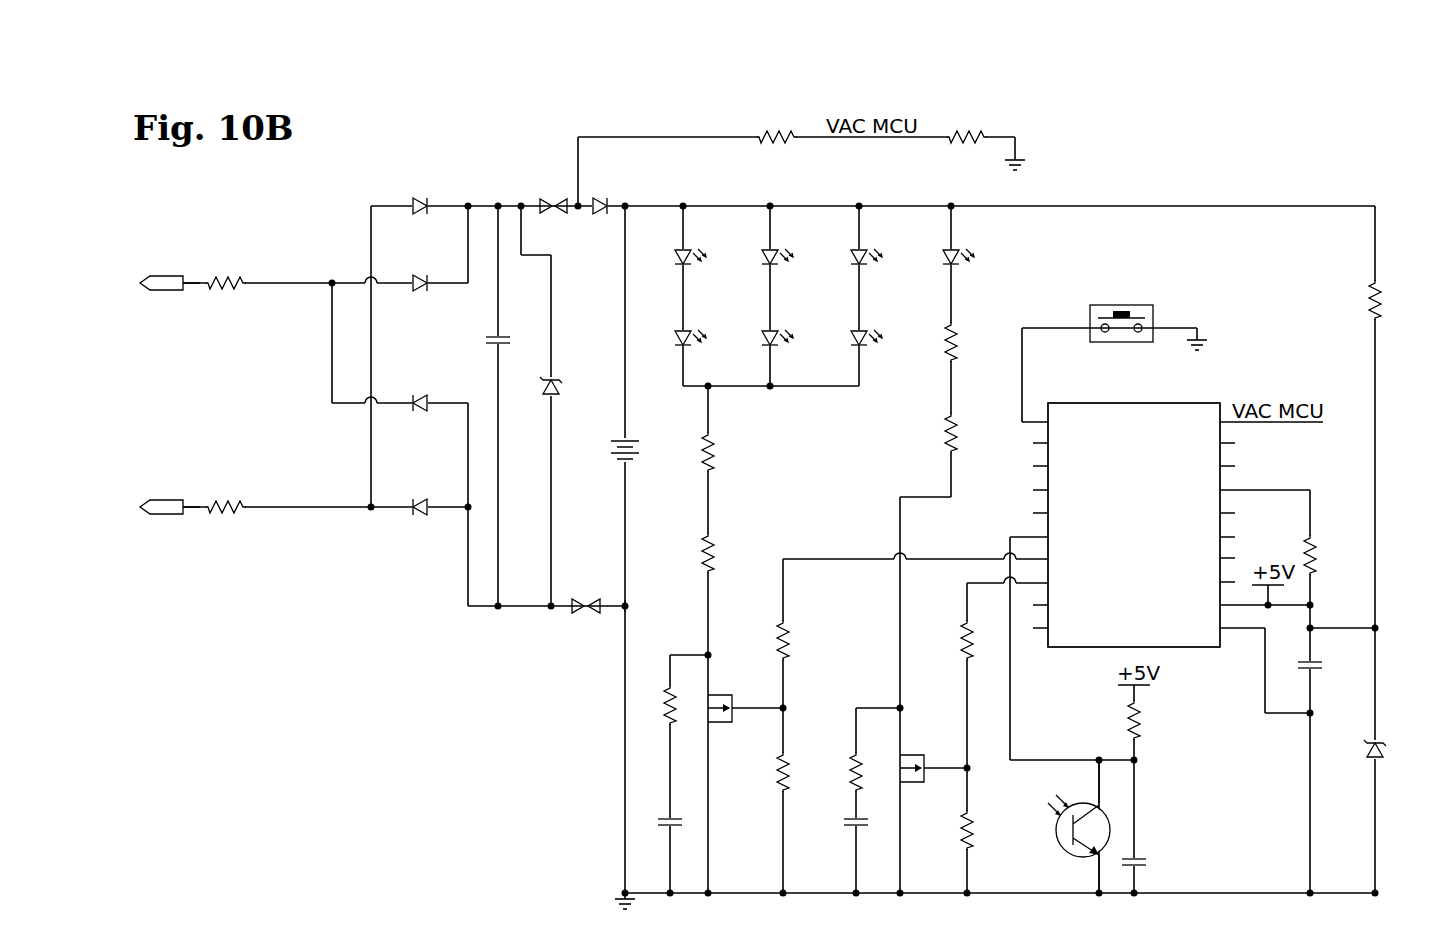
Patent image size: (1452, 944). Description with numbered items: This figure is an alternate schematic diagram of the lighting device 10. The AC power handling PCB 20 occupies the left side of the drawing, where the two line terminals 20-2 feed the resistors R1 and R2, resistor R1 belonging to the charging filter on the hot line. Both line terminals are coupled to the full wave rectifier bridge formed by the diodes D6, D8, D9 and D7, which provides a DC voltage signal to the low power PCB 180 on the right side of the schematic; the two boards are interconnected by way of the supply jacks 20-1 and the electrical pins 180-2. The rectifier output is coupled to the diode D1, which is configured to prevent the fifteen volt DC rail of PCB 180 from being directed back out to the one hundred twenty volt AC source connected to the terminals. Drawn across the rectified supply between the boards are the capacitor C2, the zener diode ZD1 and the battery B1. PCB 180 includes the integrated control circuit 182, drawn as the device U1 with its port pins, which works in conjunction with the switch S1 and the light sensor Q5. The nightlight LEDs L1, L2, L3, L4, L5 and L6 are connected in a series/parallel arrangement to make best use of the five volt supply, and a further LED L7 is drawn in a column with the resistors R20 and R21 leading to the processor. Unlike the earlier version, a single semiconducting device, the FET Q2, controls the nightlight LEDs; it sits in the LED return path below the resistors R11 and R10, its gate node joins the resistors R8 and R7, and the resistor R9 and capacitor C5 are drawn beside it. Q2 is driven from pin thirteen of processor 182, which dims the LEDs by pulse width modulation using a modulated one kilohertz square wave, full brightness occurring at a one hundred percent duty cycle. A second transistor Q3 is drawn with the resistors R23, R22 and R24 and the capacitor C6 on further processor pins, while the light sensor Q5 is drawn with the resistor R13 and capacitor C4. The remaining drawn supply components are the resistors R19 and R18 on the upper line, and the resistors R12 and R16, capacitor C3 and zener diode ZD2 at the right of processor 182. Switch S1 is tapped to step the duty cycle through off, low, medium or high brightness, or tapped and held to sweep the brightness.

The lighting device 10 is at (288, 180).
The AC power handling PCB 20 is at (312, 540).
The supply jacks 20-1 is at (578, 613).
The plug prongs 20-2 is at (163, 505).
The low power PCB 180 is at (520, 815).
The electrical pins 180-2 is at (595, 613).
The integrated control circuit 182 is at (1163, 403).
The microcontroller IC U1 is at (1134, 513).
The resistor R1 is at (226, 270).
The resistor R2 is at (226, 495).
The rectifier bridge diode D6 is at (421, 193).
The rectifier bridge diode D8 is at (421, 271).
The rectifier bridge diode D9 is at (421, 391).
The rectifier bridge diode D7 is at (421, 495).
The diode D1 is at (604, 193).
The capacitor C2 is at (484, 341).
The zener diode ZD1 is at (577, 388).
The battery B1 is at (612, 452).
The nightlight LED L1 is at (673, 261).
The nightlight LED L2 is at (673, 341).
The nightlight LED L3 is at (764, 261).
The nightlight LED L4 is at (764, 341).
The nightlight LED L5 is at (852, 261).
The nightlight LED L6 is at (852, 341).
The LED L7 is at (943, 261).
The resistor R19 is at (777, 128).
The resistor R18 is at (967, 128).
The resistor R20 is at (971, 342).
The resistor R21 is at (973, 433).
The resistor R11 is at (689, 452).
The resistor R10 is at (689, 553).
The resistor R9 is at (656, 705).
The capacitor C5 is at (656, 823).
The FET Q2 is at (724, 696).
The resistor R8 is at (771, 640).
The resistor R7 is at (771, 772).
The resistor R23 is at (836, 772).
The capacitor C6 is at (842, 823).
The transistor Q3 is at (917, 756).
The resistor R22 is at (948, 640).
The resistor R24 is at (948, 830).
The light sensor Q5 is at (1066, 826).
The resistor R13 is at (1115, 720).
The capacitor C4 is at (1150, 861).
The switch S1 is at (1121, 311).
The resistor R12 is at (1395, 300).
The resistor R16 is at (1331, 555).
The capacitor C3 is at (1296, 666).
The zener diode ZD2 is at (1399, 751).